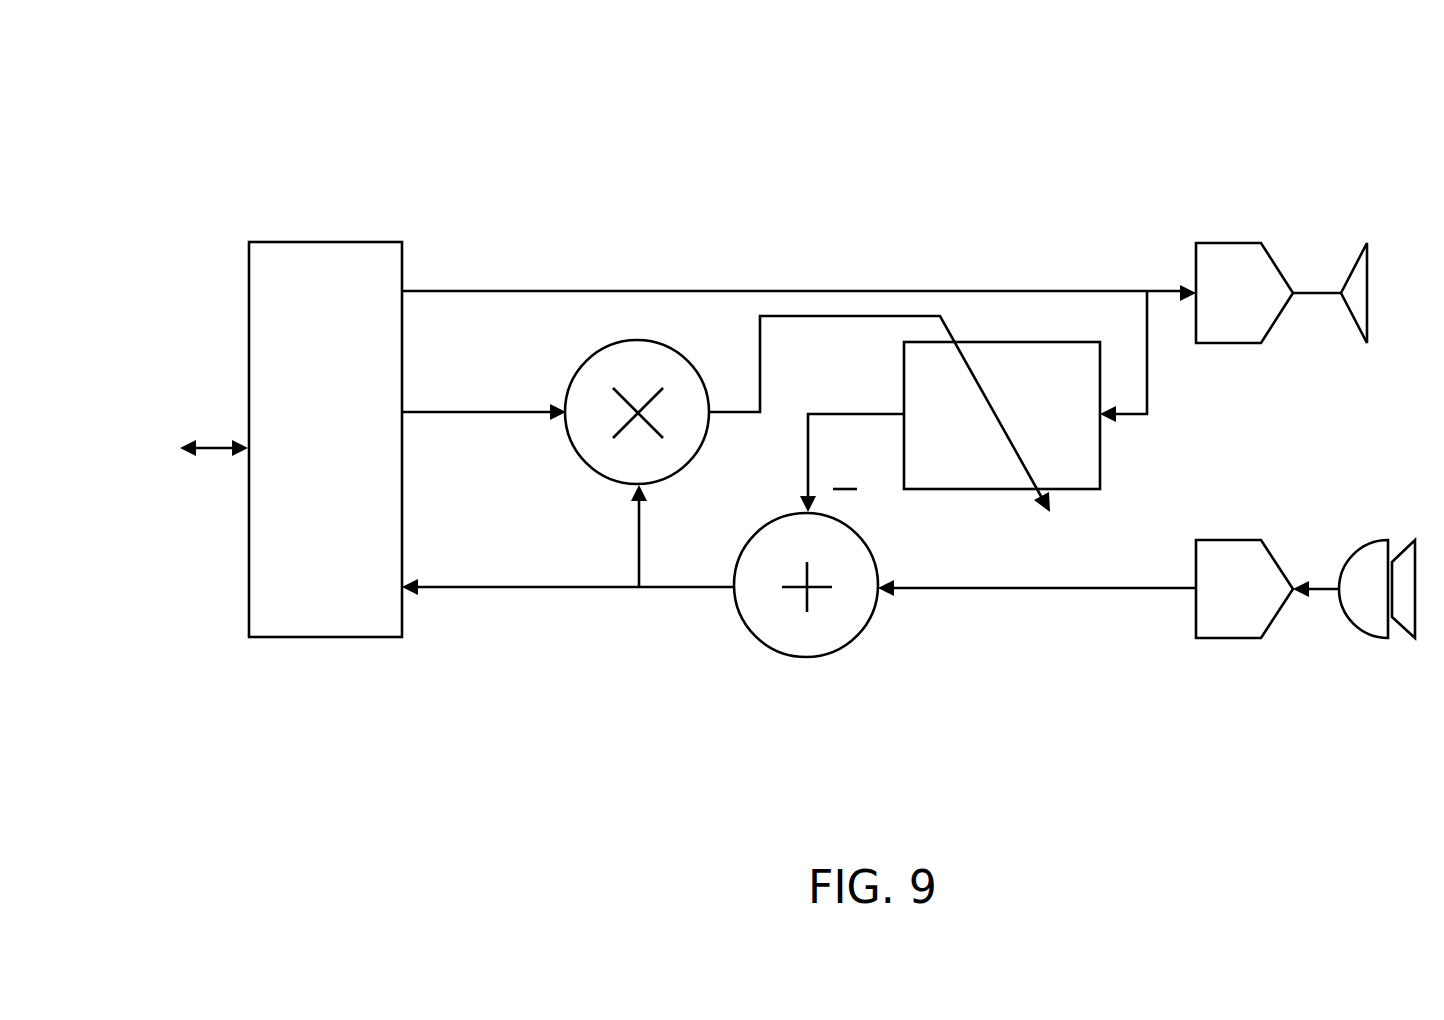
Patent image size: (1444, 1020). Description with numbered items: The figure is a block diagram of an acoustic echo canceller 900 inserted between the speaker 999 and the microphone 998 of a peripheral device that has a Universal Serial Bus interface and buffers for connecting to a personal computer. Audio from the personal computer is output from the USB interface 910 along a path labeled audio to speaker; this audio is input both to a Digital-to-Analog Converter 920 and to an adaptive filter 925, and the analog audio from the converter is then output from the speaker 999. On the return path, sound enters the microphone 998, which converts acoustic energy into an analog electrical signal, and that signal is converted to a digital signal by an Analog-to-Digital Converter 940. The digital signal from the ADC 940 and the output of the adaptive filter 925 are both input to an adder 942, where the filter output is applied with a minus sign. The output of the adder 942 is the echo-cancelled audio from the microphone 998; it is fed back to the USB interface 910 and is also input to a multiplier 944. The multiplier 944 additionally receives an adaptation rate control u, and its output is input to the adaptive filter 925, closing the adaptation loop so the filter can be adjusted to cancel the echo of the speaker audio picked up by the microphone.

The acoustic echo canceller 900 is at (698, 68).
The USB interface 910 is at (325, 412).
The Digital-to-Analog Converter (DAC) 920 is at (1244, 265).
The adaptive filter 925 is at (1034, 415).
The Analog-to-Digital Converter (ADC) 940 is at (1244, 612).
The adder 942 is at (828, 597).
The multiplier 944 is at (629, 400).
The microphone 998 is at (1355, 615).
The speaker 999 is at (1338, 275).